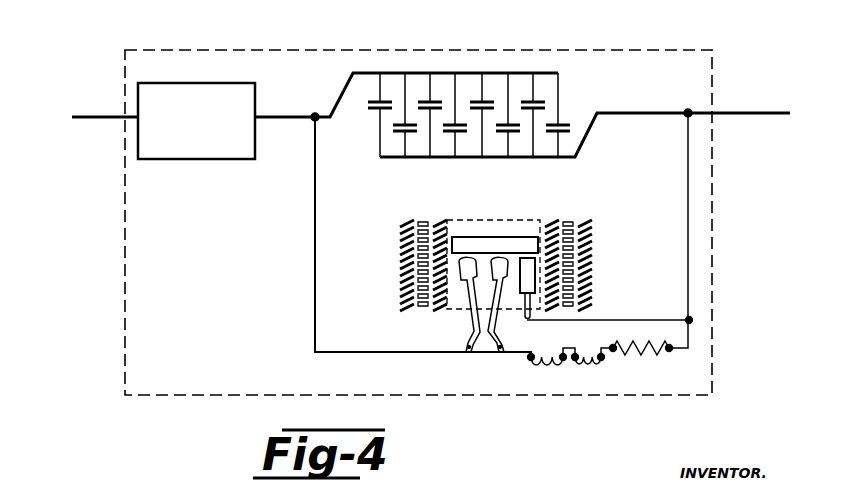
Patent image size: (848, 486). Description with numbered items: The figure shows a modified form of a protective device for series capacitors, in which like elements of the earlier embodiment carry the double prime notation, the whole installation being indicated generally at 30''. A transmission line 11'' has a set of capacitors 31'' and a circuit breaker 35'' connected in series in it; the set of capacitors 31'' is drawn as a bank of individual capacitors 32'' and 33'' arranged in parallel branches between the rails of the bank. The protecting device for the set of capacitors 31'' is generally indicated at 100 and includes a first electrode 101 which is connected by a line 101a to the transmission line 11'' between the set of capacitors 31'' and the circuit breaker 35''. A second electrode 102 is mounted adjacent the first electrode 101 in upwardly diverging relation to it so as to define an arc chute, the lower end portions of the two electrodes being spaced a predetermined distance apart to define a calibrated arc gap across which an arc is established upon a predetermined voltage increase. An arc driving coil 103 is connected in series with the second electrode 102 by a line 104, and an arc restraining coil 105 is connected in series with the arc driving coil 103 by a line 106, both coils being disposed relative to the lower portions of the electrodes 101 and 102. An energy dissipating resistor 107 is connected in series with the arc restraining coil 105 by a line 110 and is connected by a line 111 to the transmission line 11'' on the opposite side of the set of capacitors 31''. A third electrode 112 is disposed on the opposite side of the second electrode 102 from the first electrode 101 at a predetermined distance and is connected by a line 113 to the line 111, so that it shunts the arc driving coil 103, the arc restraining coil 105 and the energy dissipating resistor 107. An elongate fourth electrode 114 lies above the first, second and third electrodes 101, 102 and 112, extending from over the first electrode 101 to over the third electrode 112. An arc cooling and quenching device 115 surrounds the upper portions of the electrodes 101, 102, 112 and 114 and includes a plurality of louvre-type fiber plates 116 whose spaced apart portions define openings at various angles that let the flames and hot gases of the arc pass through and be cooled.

The capacitor installation 30'' is at (418, 200).
The transmission line 11'' is at (426, 115).
The circuit breaker 35'' is at (196, 110).
The set of capacitors 31'' is at (488, 104).
The capacitor 32'' is at (456, 88).
The capacitor 33'' is at (453, 125).
The protecting device 100 is at (551, 217).
The first electrode 101 is at (470, 325).
The line 101a is at (316, 348).
The second electrode 102 is at (497, 340).
The arc driving coil 103 is at (545, 372).
The line 104 is at (517, 351).
The arc restraining coil 105 is at (585, 372).
The line 106 is at (568, 348).
The energy dissipating resistor 107 is at (640, 351).
The line 110 is at (605, 345).
The line 111 is at (688, 240).
The third electrode 112 is at (527, 258).
The line 113 is at (612, 320).
The fourth electrode 114 is at (477, 236).
The arc cooling and quenching device 115 is at (393, 266).
The fiber plates 116 is at (440, 220).